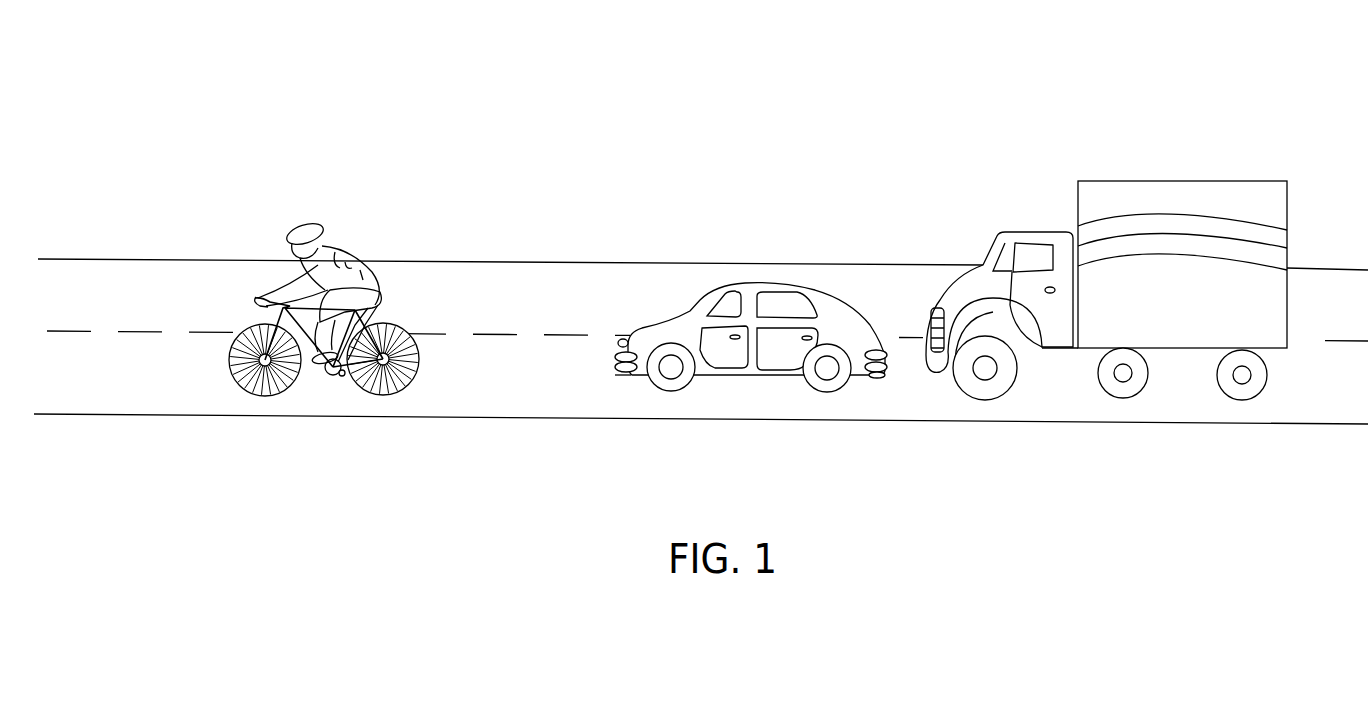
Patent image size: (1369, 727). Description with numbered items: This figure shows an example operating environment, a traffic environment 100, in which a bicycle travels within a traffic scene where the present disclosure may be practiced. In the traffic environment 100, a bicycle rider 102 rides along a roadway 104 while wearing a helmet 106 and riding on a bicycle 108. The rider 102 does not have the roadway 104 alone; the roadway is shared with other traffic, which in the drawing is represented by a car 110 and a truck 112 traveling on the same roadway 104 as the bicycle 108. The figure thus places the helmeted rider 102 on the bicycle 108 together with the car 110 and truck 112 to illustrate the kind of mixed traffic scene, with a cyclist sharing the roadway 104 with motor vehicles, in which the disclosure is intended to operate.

The traffic environment 100 is at (188, 88).
The bicycle rider 102 is at (352, 250).
The roadway 104 is at (520, 277).
The helmet 106 is at (310, 222).
The bicycle 108 is at (382, 395).
The car 110 is at (865, 378).
The truck 112 is at (1180, 350).